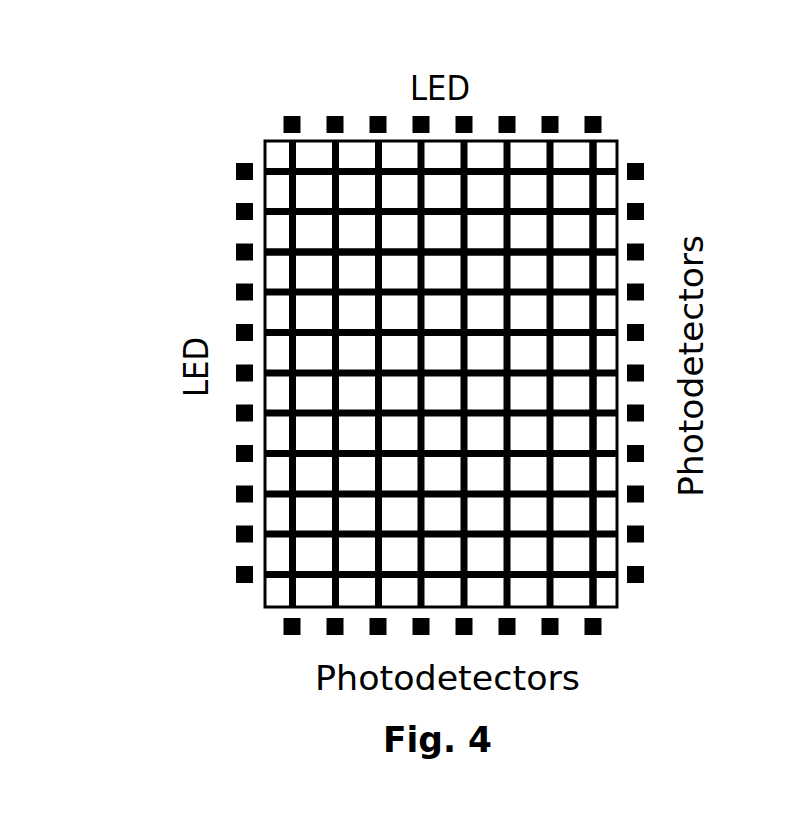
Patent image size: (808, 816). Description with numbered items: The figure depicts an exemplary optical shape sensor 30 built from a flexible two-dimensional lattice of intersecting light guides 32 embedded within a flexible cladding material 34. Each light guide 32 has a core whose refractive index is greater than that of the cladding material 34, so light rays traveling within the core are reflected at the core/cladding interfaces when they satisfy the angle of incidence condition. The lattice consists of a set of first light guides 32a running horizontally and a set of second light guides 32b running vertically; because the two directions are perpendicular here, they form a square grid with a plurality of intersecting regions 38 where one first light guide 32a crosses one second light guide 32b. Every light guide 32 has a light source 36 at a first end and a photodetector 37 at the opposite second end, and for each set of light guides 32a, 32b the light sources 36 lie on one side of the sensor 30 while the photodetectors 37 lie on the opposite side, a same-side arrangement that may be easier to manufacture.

The optical shape sensor 30 is at (276, 72).
The light guides 32 is at (281, 234).
The first light guides 32a is at (347, 178).
The second light guides 32b is at (290, 435).
The cladding material 34 is at (577, 232).
The light source 36 is at (605, 126).
The photodetector 37 is at (643, 580).
The intersecting regions 38 is at (287, 495).